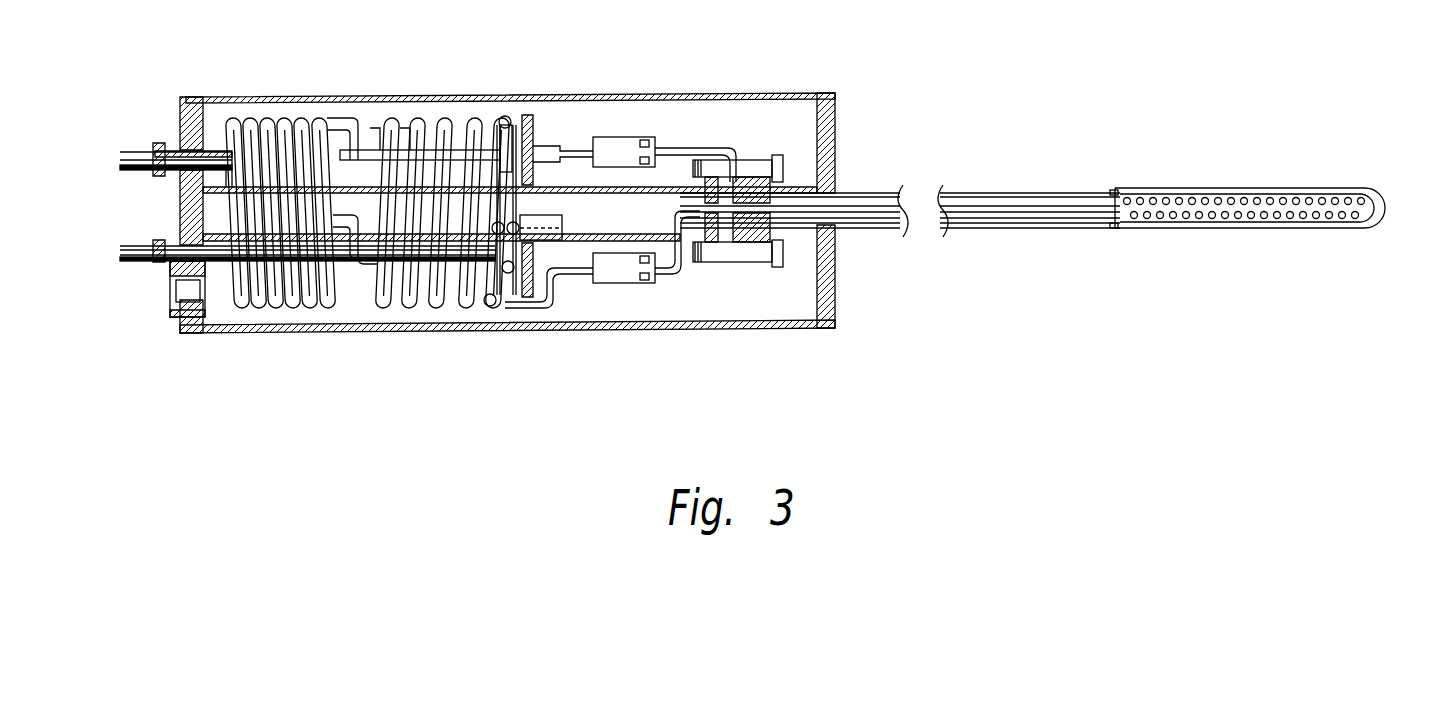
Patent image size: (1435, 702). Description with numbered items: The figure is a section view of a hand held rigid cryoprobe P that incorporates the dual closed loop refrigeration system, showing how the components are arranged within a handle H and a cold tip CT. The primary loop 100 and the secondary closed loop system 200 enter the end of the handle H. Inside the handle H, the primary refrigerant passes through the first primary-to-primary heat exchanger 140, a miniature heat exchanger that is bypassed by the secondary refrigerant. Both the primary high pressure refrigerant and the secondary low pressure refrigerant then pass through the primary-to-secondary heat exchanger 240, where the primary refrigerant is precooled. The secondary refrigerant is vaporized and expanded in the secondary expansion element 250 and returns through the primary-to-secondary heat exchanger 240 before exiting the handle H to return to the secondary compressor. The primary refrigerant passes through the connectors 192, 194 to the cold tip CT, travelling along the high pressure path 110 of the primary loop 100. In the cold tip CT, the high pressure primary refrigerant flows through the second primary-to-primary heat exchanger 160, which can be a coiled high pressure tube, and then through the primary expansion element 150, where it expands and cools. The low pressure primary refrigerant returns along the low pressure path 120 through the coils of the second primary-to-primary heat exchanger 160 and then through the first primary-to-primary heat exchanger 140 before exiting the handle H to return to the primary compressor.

The handle H is at (701, 92).
The primary loop 100 is at (128, 152).
The secondary closed loop system 200 is at (133, 266).
The first primary-to-primary heat exchanger 140 is at (263, 128).
The primary-to-secondary heat exchanger 240 is at (447, 128).
The secondary expansion element 250 is at (527, 218).
The connector 194 is at (633, 137).
The connector 192 is at (635, 283).
The rigid cryoprobe P is at (882, 122).
The low pressure path 120 is at (1027, 200).
The high pressure path 110 is at (1072, 214).
The cold tip CT is at (1208, 188).
The primary expansion element 150 is at (1372, 204).
The second primary-to-primary heat exchanger 160 is at (1272, 212).